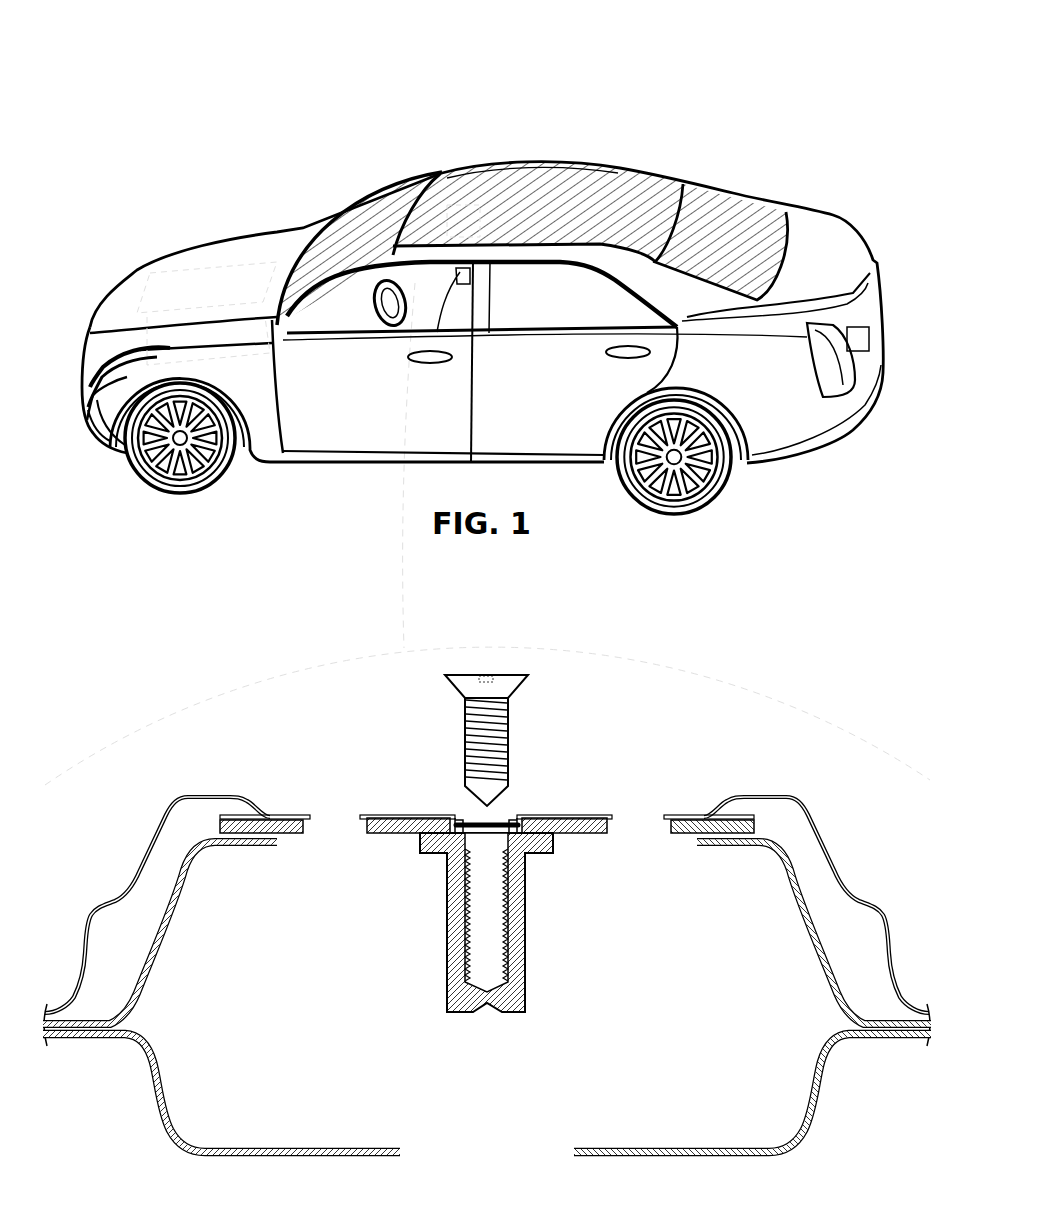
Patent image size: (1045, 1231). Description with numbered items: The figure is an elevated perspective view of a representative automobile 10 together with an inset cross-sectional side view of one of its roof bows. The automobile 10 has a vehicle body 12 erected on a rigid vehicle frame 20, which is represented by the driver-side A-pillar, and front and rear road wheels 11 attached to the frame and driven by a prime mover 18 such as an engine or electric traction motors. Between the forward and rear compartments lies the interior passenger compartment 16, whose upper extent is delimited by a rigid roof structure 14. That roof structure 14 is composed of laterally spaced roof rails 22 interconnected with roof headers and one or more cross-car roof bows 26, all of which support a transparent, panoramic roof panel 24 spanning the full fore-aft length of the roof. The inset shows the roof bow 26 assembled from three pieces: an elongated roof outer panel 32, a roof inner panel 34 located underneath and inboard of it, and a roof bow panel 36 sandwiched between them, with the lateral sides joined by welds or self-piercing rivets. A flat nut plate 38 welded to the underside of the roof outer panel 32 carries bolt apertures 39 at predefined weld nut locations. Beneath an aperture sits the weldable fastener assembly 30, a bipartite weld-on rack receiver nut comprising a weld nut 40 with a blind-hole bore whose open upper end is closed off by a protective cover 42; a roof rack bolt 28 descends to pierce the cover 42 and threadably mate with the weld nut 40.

The automobile 10 is at (175, 97).
The road wheels 11 is at (166, 492).
The vehicle body 12 is at (178, 250).
The roof structure 14 is at (451, 176).
The interior passenger compartment 16 is at (358, 217).
The prime mover 18 is at (142, 297).
The vehicle frame 20 is at (347, 282).
The roof rails 22 is at (553, 160).
The roof panel 24 is at (585, 180).
The roof bow 26 is at (229, 748).
The roof rack bolt 28 is at (510, 722).
The weldable fastener assembly 30 is at (427, 888).
The roof outer panel 32 is at (827, 848).
The roof inner panel 34 is at (811, 1095).
The roof bow panel 36 is at (807, 915).
The nut plate 38 is at (573, 834).
The bolt apertures 39 is at (453, 819).
The weld nut 40 is at (527, 942).
The protective cover 42 is at (503, 818).